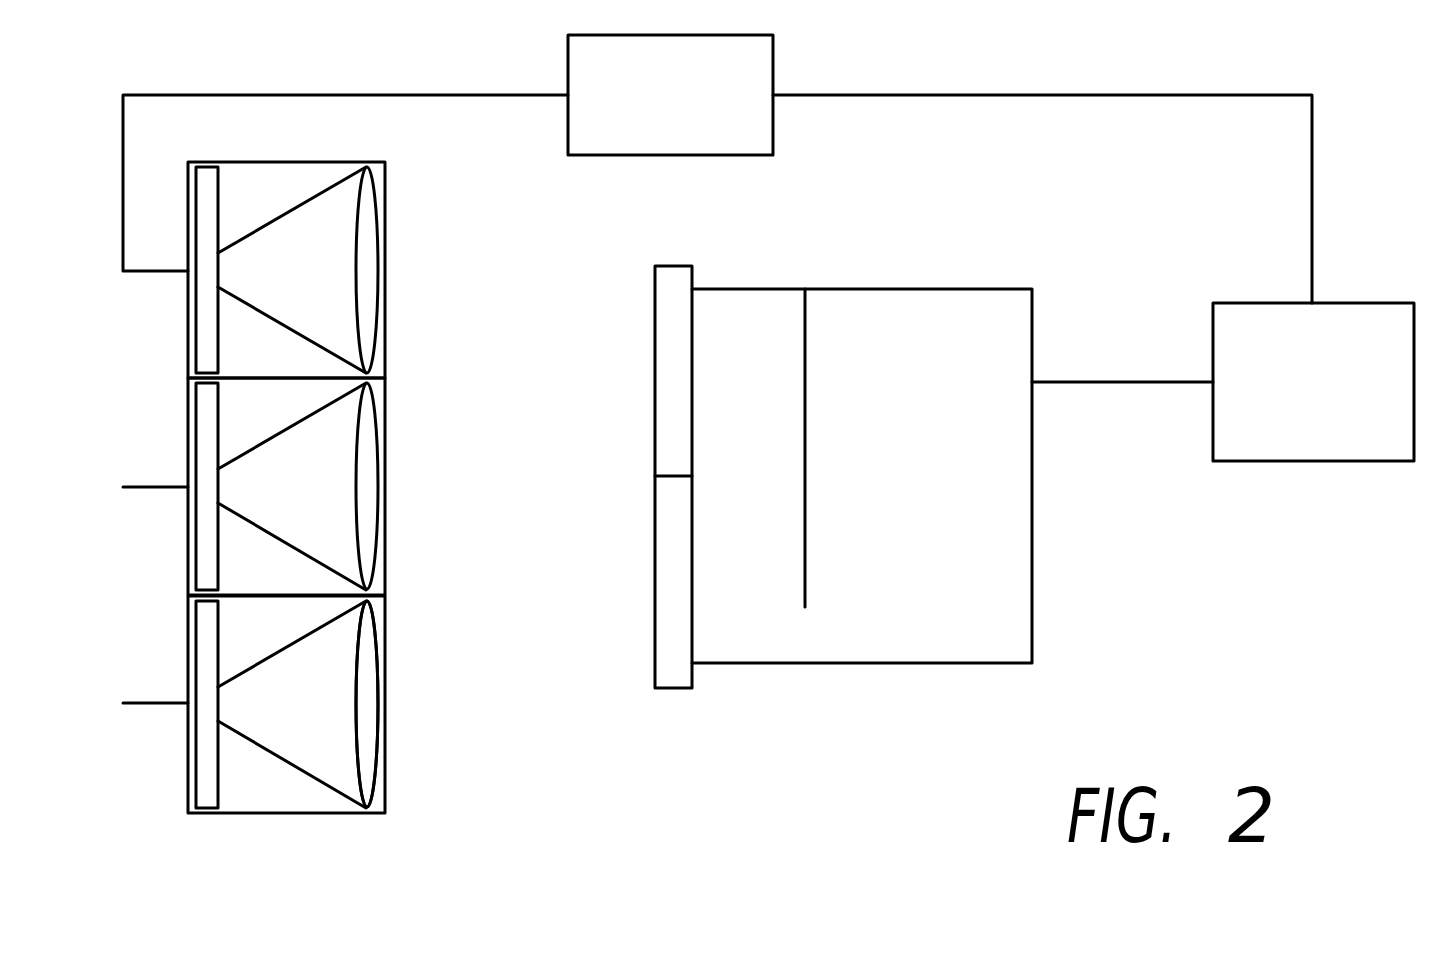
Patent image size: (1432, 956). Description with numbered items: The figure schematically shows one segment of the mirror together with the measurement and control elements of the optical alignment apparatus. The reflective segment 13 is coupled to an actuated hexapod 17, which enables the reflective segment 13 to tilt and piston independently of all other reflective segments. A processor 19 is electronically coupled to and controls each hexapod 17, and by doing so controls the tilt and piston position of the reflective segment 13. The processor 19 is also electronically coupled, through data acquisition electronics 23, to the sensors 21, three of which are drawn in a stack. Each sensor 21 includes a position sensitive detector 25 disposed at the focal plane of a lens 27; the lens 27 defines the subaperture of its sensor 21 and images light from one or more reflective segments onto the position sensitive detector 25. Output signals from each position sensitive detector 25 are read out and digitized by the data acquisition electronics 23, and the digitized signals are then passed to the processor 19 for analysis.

The reflective segment 13 is at (655, 605).
The actuated hexapod 17 is at (930, 317).
The processor 19 is at (1235, 441).
The sensor 21 is at (386, 202).
The data acquisition electronics 23 is at (758, 128).
The position sensitive detector 25 is at (207, 792).
The lens 27 is at (370, 777).